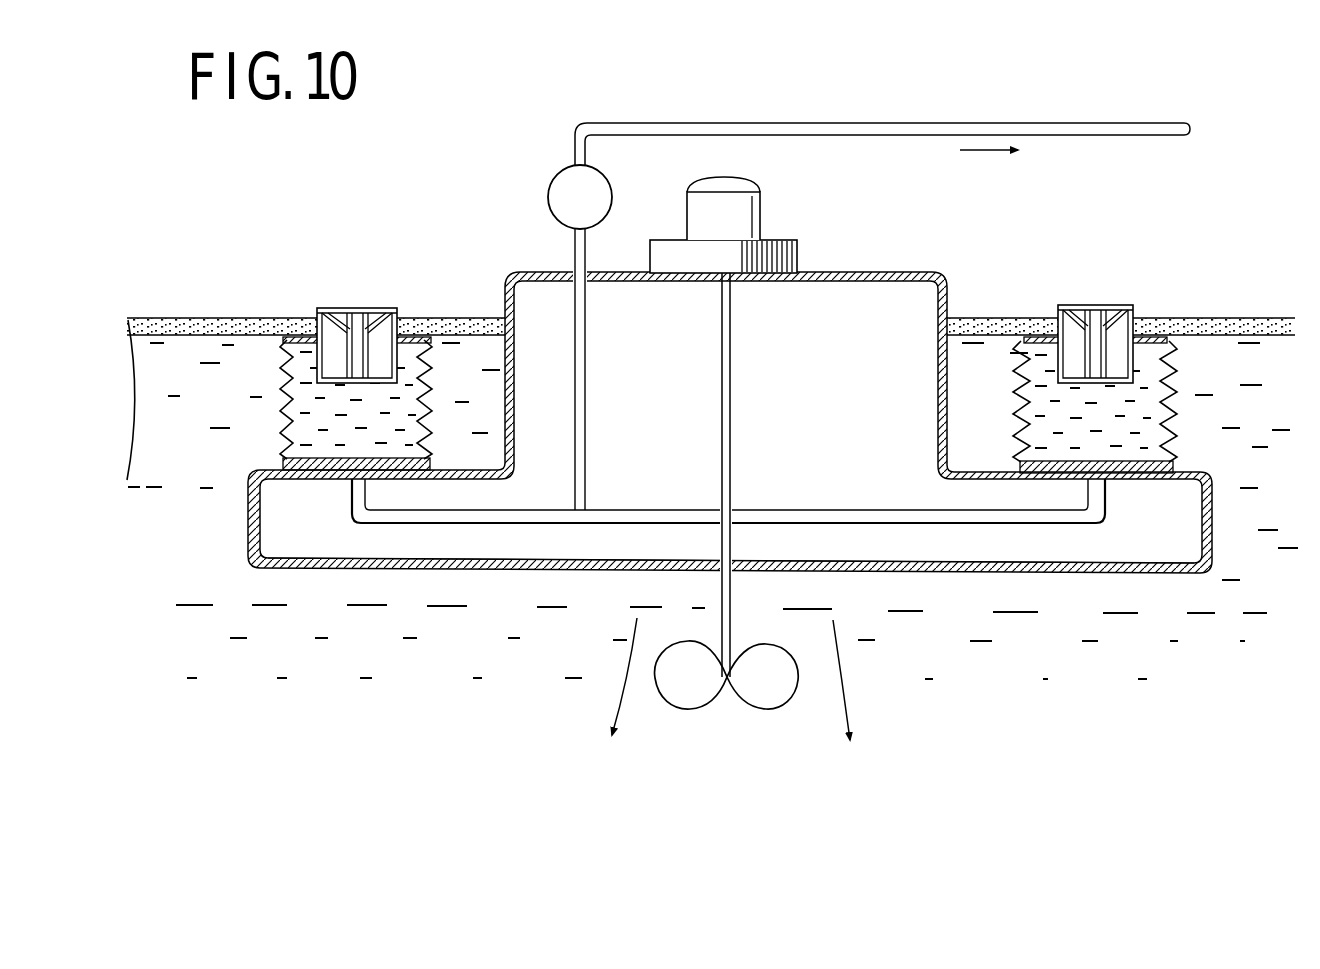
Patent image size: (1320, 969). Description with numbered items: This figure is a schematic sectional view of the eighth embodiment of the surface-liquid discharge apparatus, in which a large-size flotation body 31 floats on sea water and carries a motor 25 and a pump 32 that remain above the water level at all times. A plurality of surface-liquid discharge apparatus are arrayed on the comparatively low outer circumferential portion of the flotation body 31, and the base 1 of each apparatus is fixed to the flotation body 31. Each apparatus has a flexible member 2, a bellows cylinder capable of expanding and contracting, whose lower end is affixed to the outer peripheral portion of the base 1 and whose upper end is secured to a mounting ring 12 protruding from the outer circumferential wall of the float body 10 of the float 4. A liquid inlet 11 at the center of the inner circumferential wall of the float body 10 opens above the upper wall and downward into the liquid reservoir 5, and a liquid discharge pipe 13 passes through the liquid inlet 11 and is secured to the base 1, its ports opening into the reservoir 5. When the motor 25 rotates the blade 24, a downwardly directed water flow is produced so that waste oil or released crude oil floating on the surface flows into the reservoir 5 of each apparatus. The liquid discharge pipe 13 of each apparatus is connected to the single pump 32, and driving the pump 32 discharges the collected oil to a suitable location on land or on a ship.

The base 1 is at (675, 431).
The flexible member 2 is at (686, 406).
The float 4 is at (685, 281).
The liquid reservoir 5 is at (712, 546).
The float body 10 is at (757, 305).
The liquid inlet 11 is at (733, 301).
The mounting ring 12 is at (672, 374).
The liquid discharge pipe 13 is at (718, 548).
The blade 24 is at (731, 706).
The motor 25 is at (771, 426).
The flotation body 31 is at (731, 605).
The pump 32 is at (835, 311).